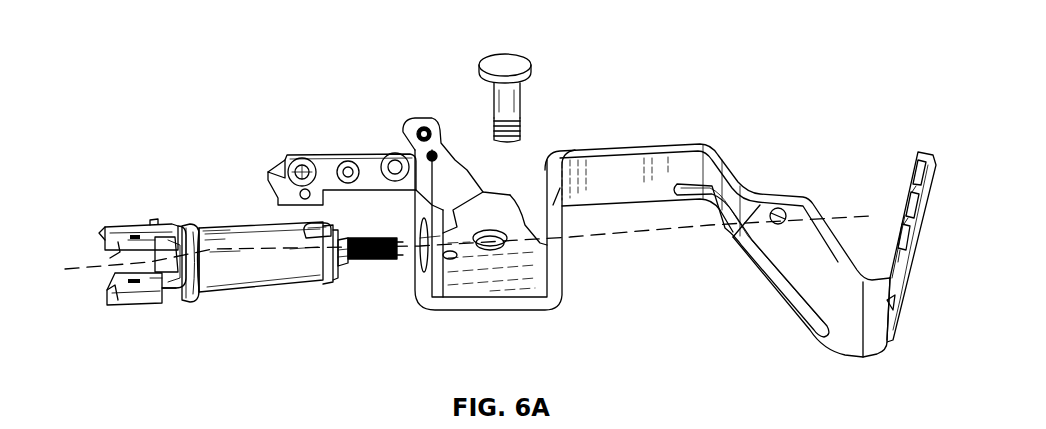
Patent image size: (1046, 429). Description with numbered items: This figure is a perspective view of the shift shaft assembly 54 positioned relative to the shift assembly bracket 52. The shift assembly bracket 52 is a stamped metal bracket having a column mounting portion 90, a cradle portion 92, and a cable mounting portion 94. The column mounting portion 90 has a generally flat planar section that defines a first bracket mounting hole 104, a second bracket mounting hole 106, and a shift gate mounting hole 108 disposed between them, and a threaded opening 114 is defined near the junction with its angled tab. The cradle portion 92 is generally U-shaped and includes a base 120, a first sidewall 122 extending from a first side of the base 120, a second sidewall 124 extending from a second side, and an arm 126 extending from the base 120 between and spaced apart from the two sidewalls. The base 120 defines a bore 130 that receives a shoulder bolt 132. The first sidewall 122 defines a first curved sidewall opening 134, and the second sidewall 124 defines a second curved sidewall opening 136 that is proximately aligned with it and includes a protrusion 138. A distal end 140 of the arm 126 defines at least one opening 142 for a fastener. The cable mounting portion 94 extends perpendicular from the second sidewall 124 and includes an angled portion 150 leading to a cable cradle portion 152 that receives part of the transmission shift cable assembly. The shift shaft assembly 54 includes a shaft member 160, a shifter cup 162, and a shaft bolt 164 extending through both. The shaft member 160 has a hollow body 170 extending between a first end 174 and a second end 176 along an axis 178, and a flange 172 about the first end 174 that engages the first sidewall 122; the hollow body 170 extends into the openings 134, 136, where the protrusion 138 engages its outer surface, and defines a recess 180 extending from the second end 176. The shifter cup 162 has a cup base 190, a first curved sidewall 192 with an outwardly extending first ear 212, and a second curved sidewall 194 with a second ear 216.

The shift assembly bracket 52 is at (876, 360).
The shift shaft assembly 54 is at (261, 254).
The column mounting portion 90 is at (262, 112).
The cradle portion 92 is at (506, 237).
The cable mounting portion 94 is at (741, 246).
The first bracket mounting hole 104 is at (342, 138).
The second bracket mounting hole 106 is at (385, 160).
The shift gate mounting hole 108 is at (345, 168).
The threaded opening 114 is at (264, 253).
The base 120 is at (490, 250).
The first sidewall 122 is at (432, 117).
The second sidewall 124 is at (560, 202).
The arm 126 is at (440, 172).
The bore 130 is at (505, 254).
The shoulder bolt 132 is at (530, 57).
The first curved sidewall opening 134 is at (420, 240).
The second curved sidewall opening 136 is at (530, 200).
The protrusion 138 is at (555, 205).
The distal end 140 is at (430, 126).
The opening 142 is at (426, 130).
The angled portion 150 is at (790, 200).
The cable cradle portion 152 is at (918, 170).
The shaft member 160 is at (295, 290).
The shifter cup 162 is at (126, 248).
The shaft bolt 164 is at (375, 260).
The hollow body 170 is at (228, 238).
The flange 172 is at (190, 302).
The first end 174 is at (200, 235).
The second end 176 is at (330, 274).
The axis 178 is at (632, 240).
The recess 180 is at (322, 228).
The cup base 190 is at (180, 235).
The first curved sidewall 192 is at (140, 233).
The second curved sidewall 194 is at (115, 250).
The first ear 212 is at (165, 222).
The second ear 216 is at (168, 300).